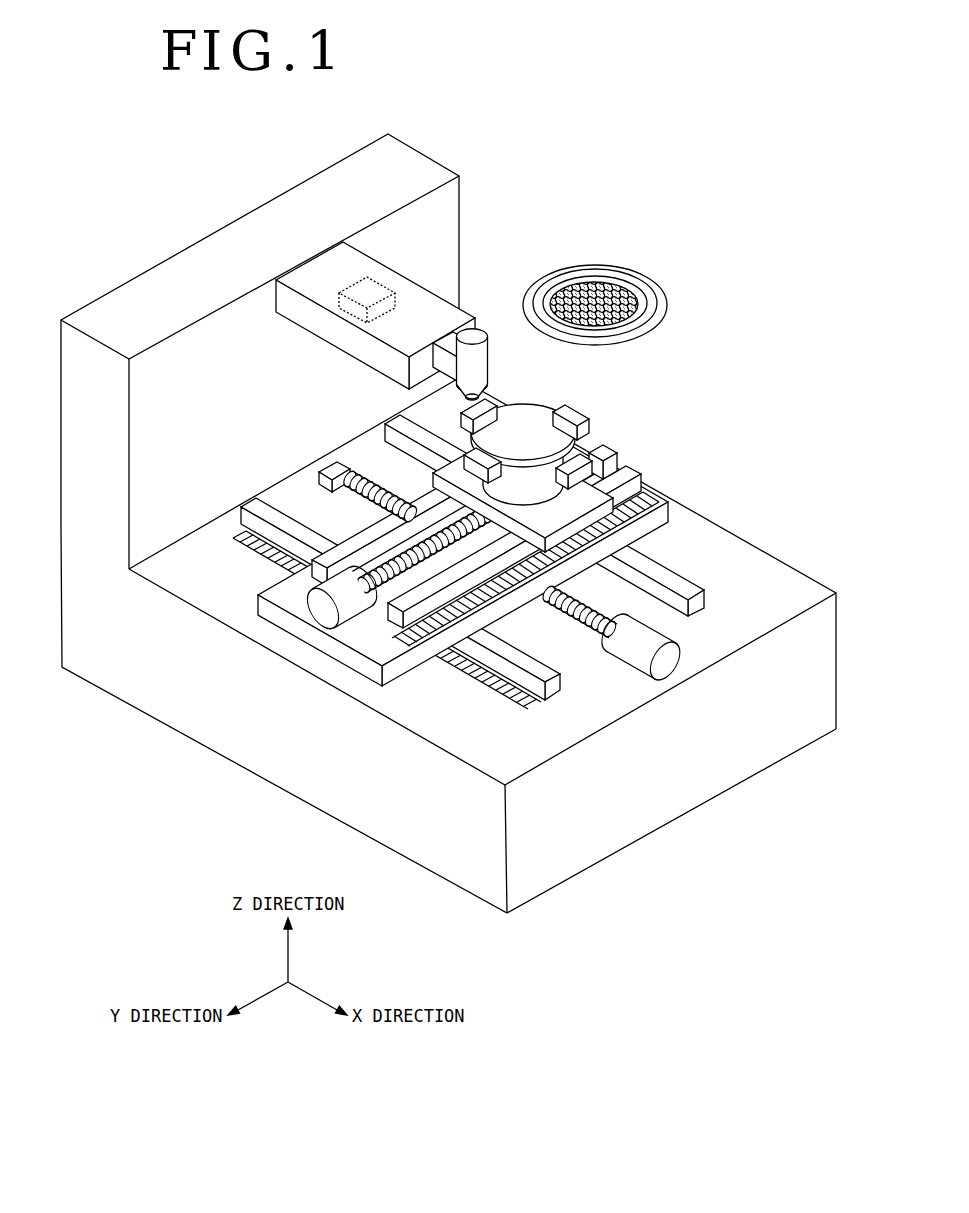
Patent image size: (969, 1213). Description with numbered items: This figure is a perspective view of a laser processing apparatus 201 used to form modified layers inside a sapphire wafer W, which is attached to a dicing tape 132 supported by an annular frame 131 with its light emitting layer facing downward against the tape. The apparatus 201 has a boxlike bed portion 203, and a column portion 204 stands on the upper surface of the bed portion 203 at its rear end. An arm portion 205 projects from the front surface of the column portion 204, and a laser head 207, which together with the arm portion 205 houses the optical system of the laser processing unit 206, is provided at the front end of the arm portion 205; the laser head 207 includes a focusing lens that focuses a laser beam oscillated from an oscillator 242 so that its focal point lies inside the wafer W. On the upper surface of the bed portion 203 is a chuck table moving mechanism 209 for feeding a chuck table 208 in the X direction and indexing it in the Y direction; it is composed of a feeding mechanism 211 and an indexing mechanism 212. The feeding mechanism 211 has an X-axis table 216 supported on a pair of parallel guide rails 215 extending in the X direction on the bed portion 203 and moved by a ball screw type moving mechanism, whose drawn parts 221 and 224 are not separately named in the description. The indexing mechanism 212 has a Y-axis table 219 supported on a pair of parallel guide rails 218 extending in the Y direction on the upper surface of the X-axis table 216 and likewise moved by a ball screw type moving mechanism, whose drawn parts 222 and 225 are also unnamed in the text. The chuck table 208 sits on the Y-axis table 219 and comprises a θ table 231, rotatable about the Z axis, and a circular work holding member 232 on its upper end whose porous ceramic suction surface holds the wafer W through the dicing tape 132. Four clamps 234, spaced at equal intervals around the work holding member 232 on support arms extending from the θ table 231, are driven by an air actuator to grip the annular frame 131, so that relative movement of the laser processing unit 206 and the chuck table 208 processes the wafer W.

The laser processing apparatus 201 is at (448, 505).
The bed portion 203 is at (792, 582).
The column portion 204 is at (407, 160).
The arm portion 205 is at (375, 301).
The laser processing unit 206 is at (471, 330).
The laser head 207 is at (470, 336).
The chuck table 208 is at (480, 538).
The chuck table moving mechanism 209 is at (525, 569).
The feeding mechanism 211 is at (648, 533).
The indexing mechanism 212 is at (625, 462).
The guide rails 215 is at (685, 587).
The X-axis table 216 is at (275, 595).
The guide rails 218 is at (358, 543).
The Y-axis table 219 is at (453, 467).
The X-axis ball screw 221 is at (613, 630).
The Y-axis ball screw 222 is at (438, 548).
The X-axis motor 224 is at (660, 662).
The Y-axis motor 225 is at (348, 608).
The θ table 231 is at (532, 486).
The work holding member 232 is at (515, 400).
The clamps 234 is at (573, 400).
The oscillator 242 is at (357, 282).
The annular frame 131 is at (621, 268).
The dicing tape 132 is at (613, 264).
The sapphire wafer W is at (623, 260).